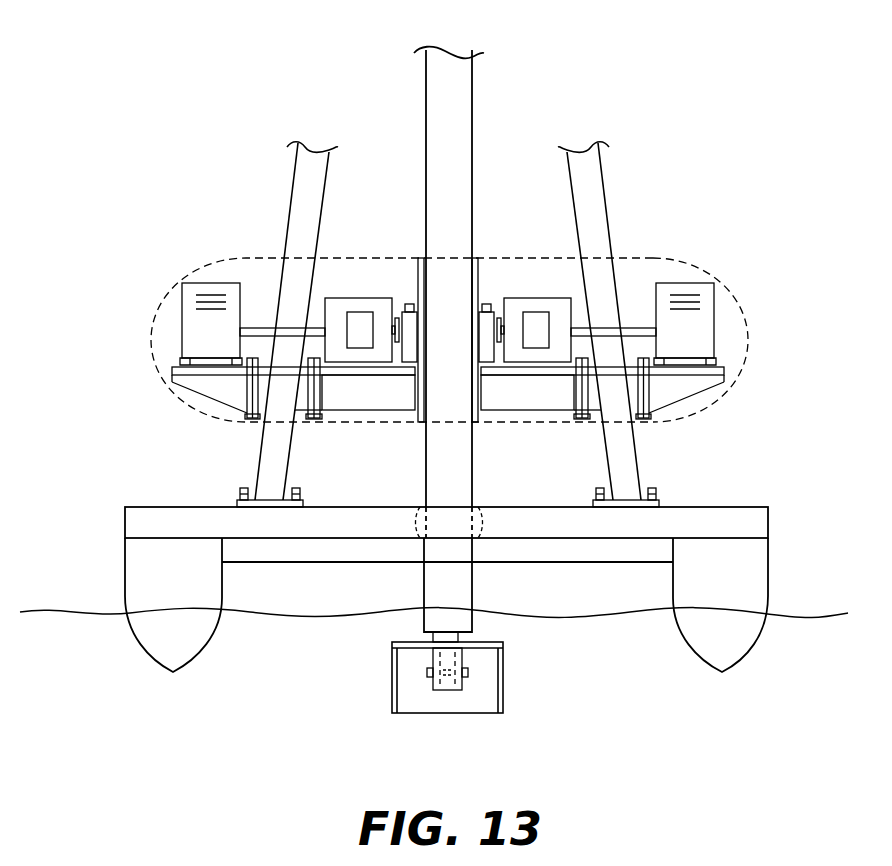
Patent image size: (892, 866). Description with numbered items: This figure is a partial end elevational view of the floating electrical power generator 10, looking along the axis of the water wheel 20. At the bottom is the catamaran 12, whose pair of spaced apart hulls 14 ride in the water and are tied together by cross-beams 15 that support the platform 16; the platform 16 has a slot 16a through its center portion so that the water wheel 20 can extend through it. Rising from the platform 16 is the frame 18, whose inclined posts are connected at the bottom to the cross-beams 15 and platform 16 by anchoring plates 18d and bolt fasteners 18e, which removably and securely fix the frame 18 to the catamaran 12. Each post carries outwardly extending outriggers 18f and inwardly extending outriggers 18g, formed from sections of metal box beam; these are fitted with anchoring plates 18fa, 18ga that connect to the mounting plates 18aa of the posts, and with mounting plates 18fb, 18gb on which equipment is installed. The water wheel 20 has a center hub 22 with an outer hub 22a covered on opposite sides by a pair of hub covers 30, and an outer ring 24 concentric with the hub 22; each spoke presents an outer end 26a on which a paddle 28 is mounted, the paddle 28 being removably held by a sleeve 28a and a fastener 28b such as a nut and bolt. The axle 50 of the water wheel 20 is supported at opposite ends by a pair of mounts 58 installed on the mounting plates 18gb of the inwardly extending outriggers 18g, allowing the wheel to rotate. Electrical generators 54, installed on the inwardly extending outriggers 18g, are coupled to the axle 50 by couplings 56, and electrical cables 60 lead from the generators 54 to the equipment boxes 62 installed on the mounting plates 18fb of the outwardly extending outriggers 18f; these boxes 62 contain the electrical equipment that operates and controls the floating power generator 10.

The floating electrical power generator 10 is at (82, 82).
The catamaran 12 is at (125, 597).
The hulls 14 is at (145, 568).
The cross-beams 15 is at (337, 552).
The platform 16 is at (125, 517).
The slot 16a is at (412, 513).
The frame 18 is at (295, 180).
The mounting plates 18aa is at (260, 424).
The anchoring plates 18d is at (267, 500).
The bolt fasteners 18e is at (240, 492).
The outwardly extending outriggers 18f is at (172, 377).
The anchoring plates 18fa is at (247, 387).
The mounting plates 18fb is at (182, 357).
The inwardly extending outriggers 18g is at (367, 400).
The anchoring plates 18ga is at (327, 422).
The mounting plates 18gb is at (400, 375).
The water wheel 20 is at (426, 88).
The center hub 22 is at (745, 313).
The outer hub 22a is at (418, 258).
The outer ring 24 is at (472, 88).
The outer end of spoke 26a is at (452, 637).
The paddle 28 is at (392, 683).
The sleeve 28a is at (447, 655).
The fastener 28b is at (465, 672).
The hub covers 30 is at (168, 292).
The axle 50 is at (410, 304).
The electrical generators 54 is at (340, 298).
The couplings 56 is at (396, 318).
The mounts 58 is at (411, 300).
The electrical cables 60 is at (265, 328).
The equipment boxes 62 is at (183, 288).